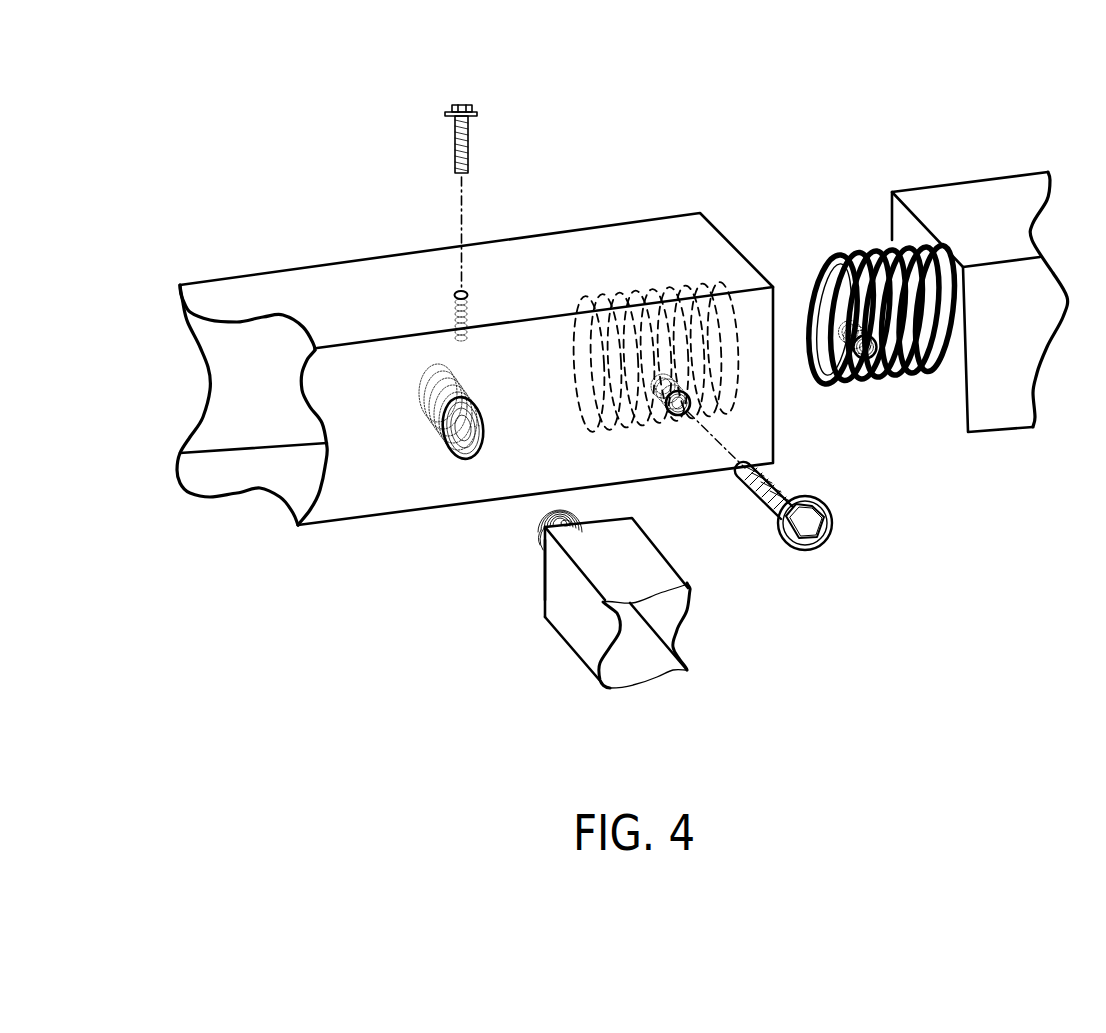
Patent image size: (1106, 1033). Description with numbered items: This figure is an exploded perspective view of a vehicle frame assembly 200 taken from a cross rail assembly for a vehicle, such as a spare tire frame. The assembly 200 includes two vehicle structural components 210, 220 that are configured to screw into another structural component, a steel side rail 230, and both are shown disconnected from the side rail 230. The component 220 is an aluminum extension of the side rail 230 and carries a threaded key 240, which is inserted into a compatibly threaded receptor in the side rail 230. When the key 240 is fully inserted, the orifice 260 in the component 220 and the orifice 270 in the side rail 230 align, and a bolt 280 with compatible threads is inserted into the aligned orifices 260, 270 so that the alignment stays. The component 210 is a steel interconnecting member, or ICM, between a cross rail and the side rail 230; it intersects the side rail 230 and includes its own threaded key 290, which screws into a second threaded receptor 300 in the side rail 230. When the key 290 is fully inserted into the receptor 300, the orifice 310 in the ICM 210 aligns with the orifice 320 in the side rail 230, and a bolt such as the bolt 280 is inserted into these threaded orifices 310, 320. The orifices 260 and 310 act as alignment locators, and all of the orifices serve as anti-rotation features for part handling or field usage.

The vehicle frame assembly 200 is at (142, 83).
The vehicle structural component 210 is at (583, 615).
The vehicle structural component 220 is at (997, 187).
The side rail 230 is at (563, 240).
The threaded key 240 is at (915, 386).
The orifice 260 is at (707, 277).
The orifice 270 is at (682, 416).
The bolt 280 is at (813, 533).
The threaded key 290 is at (546, 569).
The receptor 300 is at (427, 427).
The orifice 310 is at (560, 525).
The orifice 320 is at (458, 294).